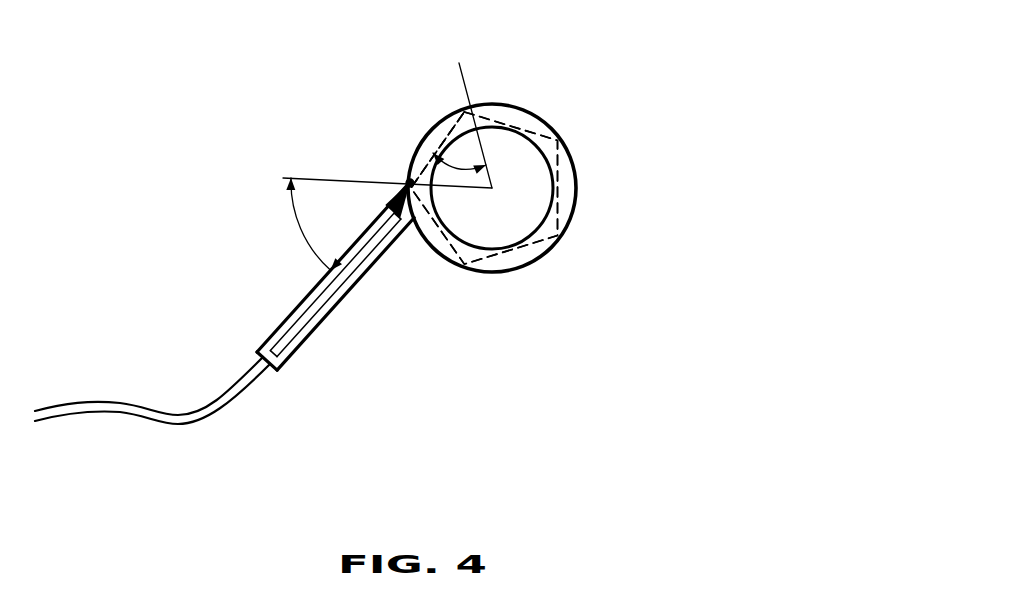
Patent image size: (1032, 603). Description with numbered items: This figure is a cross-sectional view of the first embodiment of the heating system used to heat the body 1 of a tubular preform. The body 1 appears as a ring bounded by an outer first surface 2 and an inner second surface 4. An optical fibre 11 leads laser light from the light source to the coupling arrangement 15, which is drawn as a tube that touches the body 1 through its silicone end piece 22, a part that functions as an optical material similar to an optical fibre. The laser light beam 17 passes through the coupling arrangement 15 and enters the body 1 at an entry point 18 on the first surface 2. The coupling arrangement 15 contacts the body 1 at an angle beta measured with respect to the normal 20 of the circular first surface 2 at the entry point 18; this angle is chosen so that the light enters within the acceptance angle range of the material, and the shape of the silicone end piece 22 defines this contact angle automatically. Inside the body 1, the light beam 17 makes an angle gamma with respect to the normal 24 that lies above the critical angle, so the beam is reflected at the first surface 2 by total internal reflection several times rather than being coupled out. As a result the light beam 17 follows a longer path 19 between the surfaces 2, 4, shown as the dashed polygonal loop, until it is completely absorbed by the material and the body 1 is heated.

The body 1 is at (745, 152).
The first surface 2 is at (573, 210).
The second surface 4 is at (532, 237).
The optical fibre 11 is at (160, 414).
The coupling arrangement 15 is at (265, 343).
The laser light beam 17 is at (568, 151).
The longer path 19 is at (484, 188).
The entry point 18 is at (403, 178).
The normal 20 is at (460, 118).
The silicone end piece 22 is at (400, 183).
The normal 24 is at (463, 78).